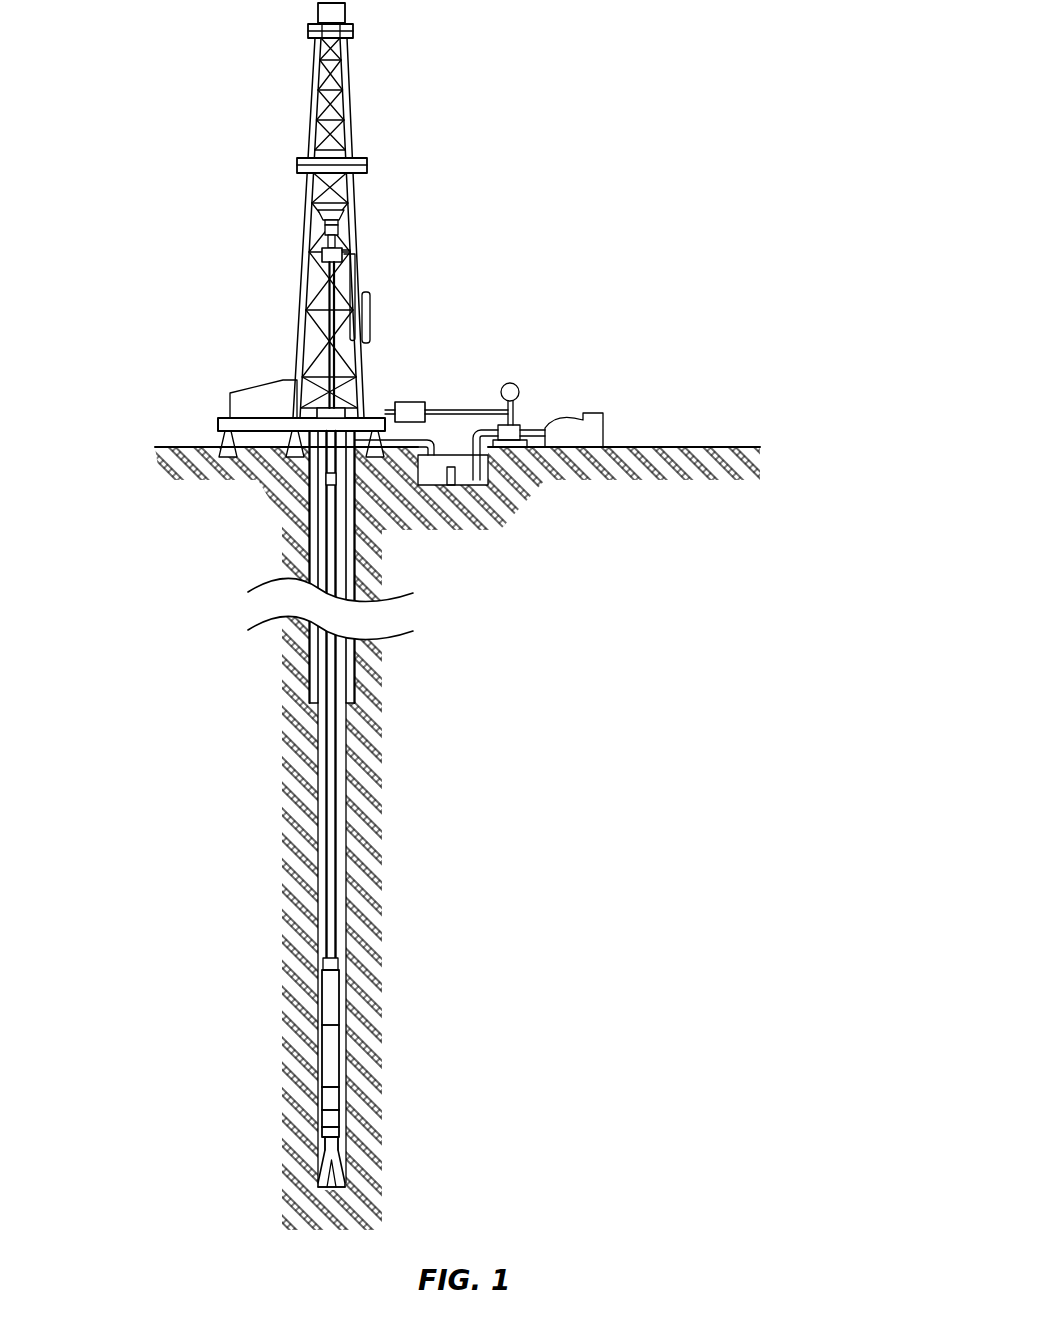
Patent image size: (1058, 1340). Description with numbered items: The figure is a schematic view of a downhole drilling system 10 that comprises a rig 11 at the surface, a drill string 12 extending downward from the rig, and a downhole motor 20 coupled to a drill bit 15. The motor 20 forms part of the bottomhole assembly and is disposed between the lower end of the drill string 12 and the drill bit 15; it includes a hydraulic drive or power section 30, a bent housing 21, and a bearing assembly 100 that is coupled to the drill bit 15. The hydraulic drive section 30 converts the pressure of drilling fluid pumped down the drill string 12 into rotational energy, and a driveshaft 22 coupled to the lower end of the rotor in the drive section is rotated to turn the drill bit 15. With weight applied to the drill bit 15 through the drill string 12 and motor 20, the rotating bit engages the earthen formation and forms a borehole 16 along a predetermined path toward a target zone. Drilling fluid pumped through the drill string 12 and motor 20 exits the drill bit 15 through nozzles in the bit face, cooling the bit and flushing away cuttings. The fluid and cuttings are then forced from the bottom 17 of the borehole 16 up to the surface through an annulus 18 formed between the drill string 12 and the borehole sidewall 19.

The downhole drilling system 10 is at (583, 238).
The rig 11 is at (360, 233).
The drill string 12 is at (337, 753).
The drill bit 15 is at (316, 1172).
The borehole 16 is at (348, 985).
The bottom of the borehole 17 is at (340, 1188).
The annulus 18 is at (342, 835).
The borehole sidewall 19 is at (320, 908).
The downhole motor 20 is at (419, 1027).
The bent housing 21 is at (332, 1095).
The driveshaft 22 is at (325, 1142).
The hydraulic drive section 30 is at (330, 1055).
The bearing assembly 100 is at (332, 1122).